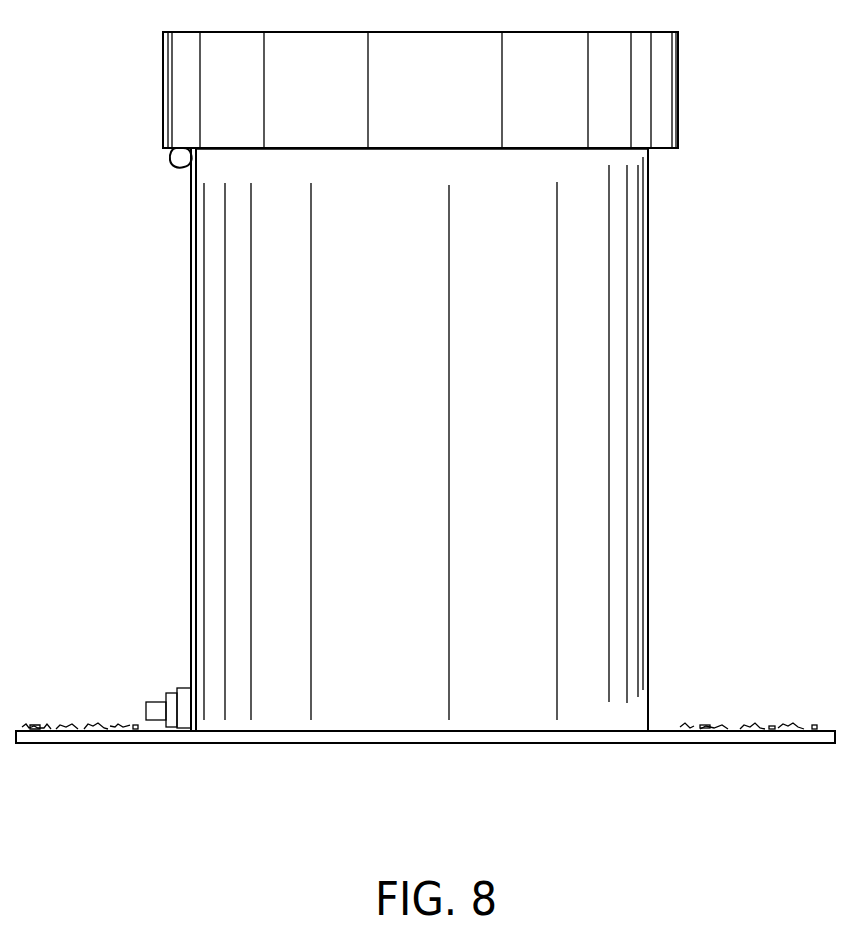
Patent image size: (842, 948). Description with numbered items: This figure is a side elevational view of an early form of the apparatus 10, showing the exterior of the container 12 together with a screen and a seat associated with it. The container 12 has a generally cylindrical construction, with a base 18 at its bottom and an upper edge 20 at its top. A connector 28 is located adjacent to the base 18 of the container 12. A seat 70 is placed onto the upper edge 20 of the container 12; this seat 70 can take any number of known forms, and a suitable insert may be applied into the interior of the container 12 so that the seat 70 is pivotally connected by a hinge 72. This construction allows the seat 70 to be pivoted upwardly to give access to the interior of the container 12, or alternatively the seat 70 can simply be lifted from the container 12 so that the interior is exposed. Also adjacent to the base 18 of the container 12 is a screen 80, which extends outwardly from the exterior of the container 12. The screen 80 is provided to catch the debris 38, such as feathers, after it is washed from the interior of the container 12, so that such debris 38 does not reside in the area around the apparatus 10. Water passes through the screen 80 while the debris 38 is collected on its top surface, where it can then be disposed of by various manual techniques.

The apparatus 10 is at (682, 305).
The container 12 is at (648, 382).
The base 18 is at (508, 730).
The upper edge 20 is at (557, 149).
The connector 28 is at (175, 690).
The debris 38 is at (88, 725).
The seat 70 is at (652, 93).
The hinge 72 is at (175, 167).
The screen 80 is at (725, 728).